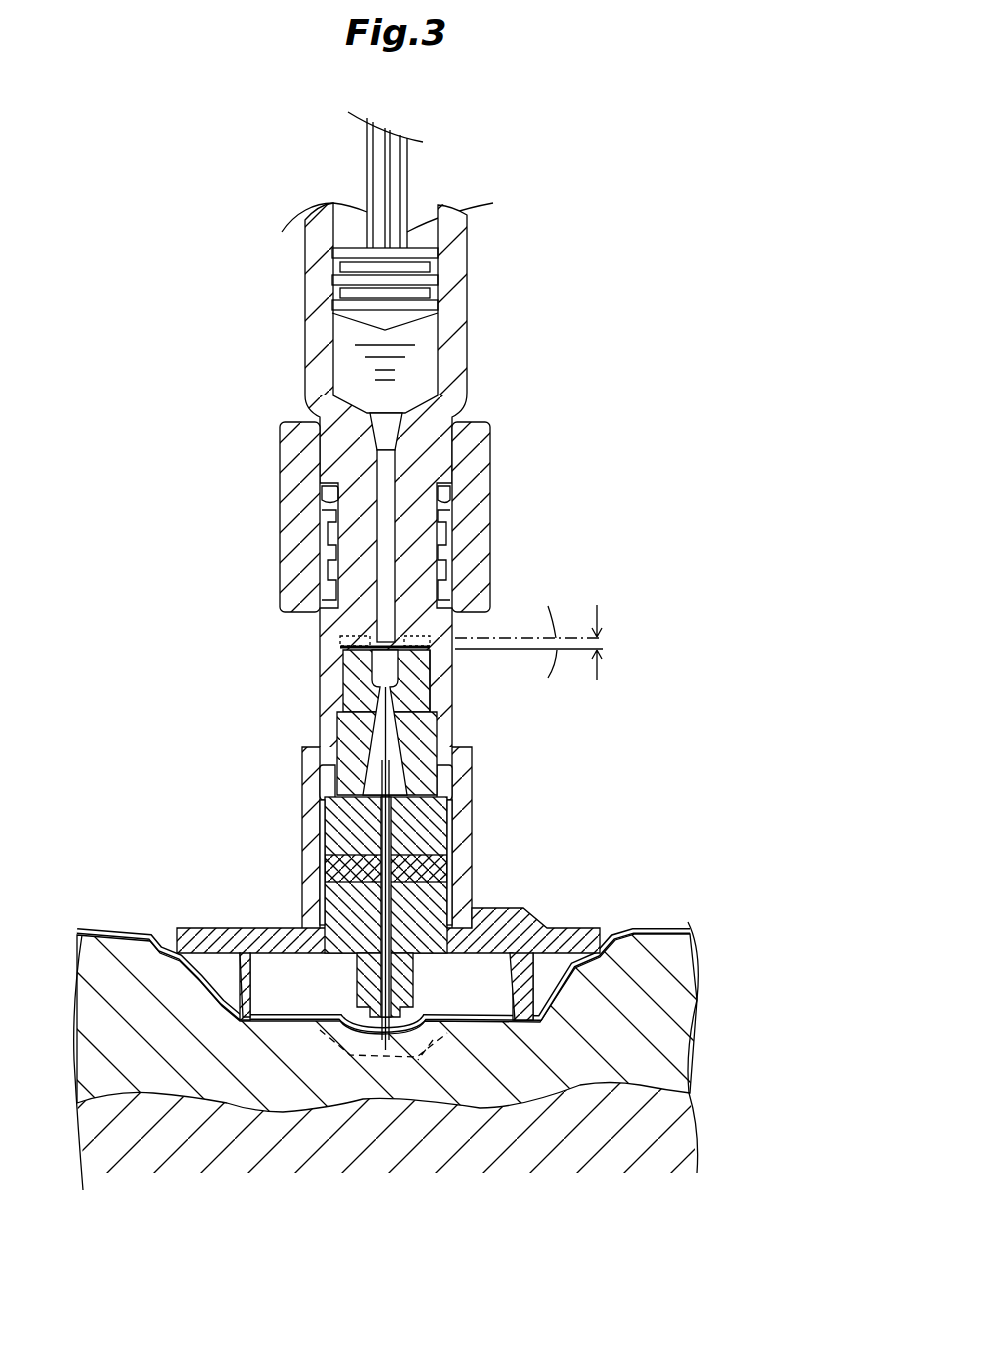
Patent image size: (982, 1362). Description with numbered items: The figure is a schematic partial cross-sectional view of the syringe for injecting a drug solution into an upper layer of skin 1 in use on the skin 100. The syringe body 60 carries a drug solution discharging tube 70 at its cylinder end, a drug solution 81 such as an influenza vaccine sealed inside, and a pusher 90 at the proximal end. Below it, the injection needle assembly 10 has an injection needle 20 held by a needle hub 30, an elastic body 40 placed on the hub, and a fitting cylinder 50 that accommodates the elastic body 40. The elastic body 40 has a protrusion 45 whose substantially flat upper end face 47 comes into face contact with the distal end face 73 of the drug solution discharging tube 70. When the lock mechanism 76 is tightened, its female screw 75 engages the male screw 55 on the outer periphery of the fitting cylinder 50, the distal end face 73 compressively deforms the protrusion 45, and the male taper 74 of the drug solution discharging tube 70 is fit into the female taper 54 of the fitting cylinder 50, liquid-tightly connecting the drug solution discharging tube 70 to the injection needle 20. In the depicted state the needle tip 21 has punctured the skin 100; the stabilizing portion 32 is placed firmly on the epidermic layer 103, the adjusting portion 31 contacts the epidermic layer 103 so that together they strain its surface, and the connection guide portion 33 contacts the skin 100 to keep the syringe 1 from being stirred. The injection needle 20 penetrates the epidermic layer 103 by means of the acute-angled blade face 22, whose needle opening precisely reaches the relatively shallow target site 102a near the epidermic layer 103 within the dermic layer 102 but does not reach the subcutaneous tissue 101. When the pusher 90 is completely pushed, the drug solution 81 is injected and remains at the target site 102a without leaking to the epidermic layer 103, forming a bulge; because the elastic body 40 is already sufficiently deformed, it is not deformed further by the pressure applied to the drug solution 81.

The syringe for injecting a drug solution into an upper layer of skin 1 is at (556, 135).
The injection needle assembly 10 is at (359, 835).
The injection needle 20 is at (335, 957).
The needle tip 21 is at (385, 1040).
The blade face 22 is at (390, 1040).
The needle hub 30 is at (360, 908).
The adjusting portion 31 is at (360, 980).
The stabilizing portion 32 is at (248, 995).
The connection guide portion 33 is at (192, 932).
The elastic body 40 is at (344, 768).
The protrusion 45 is at (355, 665).
The upper end face 47 is at (342, 638).
The fitting cylinder 50 is at (306, 742).
The female taper 54 is at (322, 495).
The male screw 55 is at (460, 545).
The syringe body 60 is at (335, 475).
The drug solution discharging tube 70 is at (320, 600).
The distal end face 73 is at (423, 660).
The male taper 74 is at (330, 527).
The female screw 75 is at (468, 500).
The lock mechanism 76 is at (480, 422).
The drug solution 81 is at (422, 363).
The pusher 90 is at (352, 174).
The skin 100 is at (425, 1054).
The subcutaneous tissue 101 is at (668, 1140).
The dermic layer 102 is at (663, 1018).
The target site 102a is at (404, 1057).
The epidermic layer 103 is at (690, 935).